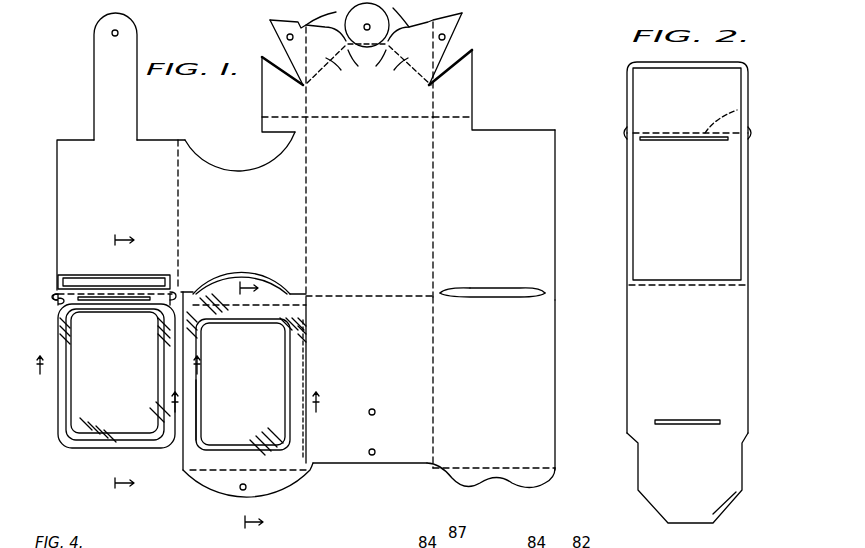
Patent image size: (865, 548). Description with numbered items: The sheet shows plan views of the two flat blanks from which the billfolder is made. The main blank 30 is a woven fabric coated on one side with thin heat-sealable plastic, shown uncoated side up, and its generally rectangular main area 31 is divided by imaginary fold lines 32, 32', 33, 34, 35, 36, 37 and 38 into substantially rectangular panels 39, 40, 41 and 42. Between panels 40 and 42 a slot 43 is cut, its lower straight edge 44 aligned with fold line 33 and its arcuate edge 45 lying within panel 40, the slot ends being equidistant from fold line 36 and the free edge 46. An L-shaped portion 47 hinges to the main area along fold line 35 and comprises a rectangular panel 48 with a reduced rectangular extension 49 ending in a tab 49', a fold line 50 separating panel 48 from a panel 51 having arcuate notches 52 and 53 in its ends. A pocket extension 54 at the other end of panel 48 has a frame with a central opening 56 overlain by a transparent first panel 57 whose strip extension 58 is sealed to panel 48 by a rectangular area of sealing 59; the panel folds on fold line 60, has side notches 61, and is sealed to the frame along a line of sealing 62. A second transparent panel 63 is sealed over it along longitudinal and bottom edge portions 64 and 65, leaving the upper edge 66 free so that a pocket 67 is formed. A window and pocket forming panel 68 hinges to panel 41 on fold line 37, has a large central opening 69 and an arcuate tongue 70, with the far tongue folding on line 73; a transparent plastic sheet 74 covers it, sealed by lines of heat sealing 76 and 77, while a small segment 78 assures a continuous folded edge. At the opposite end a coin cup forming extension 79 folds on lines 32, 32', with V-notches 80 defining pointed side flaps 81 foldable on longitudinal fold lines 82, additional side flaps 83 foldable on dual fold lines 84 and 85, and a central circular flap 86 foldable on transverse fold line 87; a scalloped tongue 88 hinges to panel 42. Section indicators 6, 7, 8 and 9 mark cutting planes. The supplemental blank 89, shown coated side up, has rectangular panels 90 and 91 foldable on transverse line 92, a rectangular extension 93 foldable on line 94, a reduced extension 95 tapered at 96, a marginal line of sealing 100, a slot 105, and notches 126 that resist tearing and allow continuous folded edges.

In FIG. 1, the main blank 30 is at (499, 147).
In FIG. 1, the main area 31 is at (555, 218).
In FIG. 1, the fold line 32 is at (347, 131).
In FIG. 1, the fold line 32' is at (452, 138).
In FIG. 1, the fold line 33 is at (378, 296).
In FIG. 1, the fold line 34 is at (500, 468).
In FIG. 1, the fold line 35 is at (306, 240).
In FIG. 1, the fold line 36 is at (433, 216).
In FIG. 1, the fold line 37 is at (309, 338).
In FIG. 1, the fold line 38 is at (433, 374).
In FIG. 1, the panel 39 is at (369, 207).
In FIG. 1, the panel 40 is at (494, 213).
In FIG. 1, the panel 41 is at (369, 380).
In FIG. 1, the panel 42 is at (494, 382).
In FIG. 1, the slot 43 is at (500, 288).
In FIG. 1, the lower straight edge 44 is at (505, 297).
In FIG. 1, the arcuate edge 45 is at (462, 289).
In FIG. 1, the free edge 46 is at (555, 345).
In FIG. 1, the L-shaped portion 47 is at (160, 140).
In FIG. 1, the rectangular panel 48 is at (117, 215).
In FIG. 1, the reduced rectangular extension 49 is at (93, 76).
In FIG. 1, the tab 49' is at (142, 23).
In FIG. 1, the fold line 50 is at (178, 177).
In FIG. 1, the panel 51 is at (242, 213).
In FIG. 1, the arcuate notch 52 is at (240, 172).
In FIG. 1, the arcuate notch 53 is at (220, 275).
In FIG. 1, the pocket extension 54 is at (60, 410).
In FIG. 1, the central opening 56 is at (75, 401).
In FIG. 1, the first panel 57 is at (57, 300).
In FIG. 1, the top transverse strip extension 58 is at (98, 278).
In FIG. 1, the rectangular area of sealing 59 is at (126, 280).
In FIG. 1, the fold line 60 is at (82, 282).
In FIG. 1, the side notches 61 is at (163, 278).
In FIG. 1, the line of sealing 62 is at (97, 302).
In FIG. 1, the second pocket forming panel 63 is at (116, 376).
In FIG. 1, the longitudinal edge portions 64 is at (165, 353).
In FIG. 1, the bottom edge portion 65 is at (96, 449).
In FIG. 1, the upper edge 66 is at (118, 311).
In FIG. 1, the pocket 67 is at (63, 457).
In FIG. 1, the window and pocket forming panel 68 is at (184, 472).
In FIG. 1, the central opening 69 is at (200, 412).
In FIG. 1, the arcuate tongue 70 is at (247, 278).
In FIG. 1, the fold line 73 is at (262, 462).
In FIG. 1, the transparent plastic sheet 74 is at (244, 381).
In FIG. 1, the line of heat sealing 76 is at (262, 283).
In FIG. 1, the line of heat sealing 77 is at (225, 493).
In FIG. 1, the small segment 78 is at (307, 297).
In FIG. 1, the coin cup forming extension 79 is at (343, 42).
In FIG. 1, the V-notches 80 is at (280, 68).
In FIG. 1, the pointed side flaps 81 is at (262, 97).
In FIG. 1, the longitudinal fold lines 82 is at (306, 87).
In FIG. 1, the side flaps 83 is at (272, 28).
In FIG. 1, the fold line 84 is at (303, 22).
In FIG. 1, the fold line 85 is at (404, 68).
In FIG. 1, the central circular flap 86 is at (384, 14).
In FIG. 1, the transverse fold line 87 is at (367, 61).
In FIG. 1, the scalloped tongue 88 is at (462, 485).
In FIG. 2, the supplemental blank 89 is at (734, 226).
In FIG. 2, the rectangular panel 90 is at (687, 206).
In FIG. 2, the rectangular panel 91 is at (735, 330).
In FIG. 2, the transverse fold line 92 is at (683, 287).
In FIG. 2, the rectangular extension 93 is at (687, 100).
In FIG. 2, the transverse fold line 94 is at (742, 112).
In FIG. 2, the reduced extension 95 is at (738, 460).
In FIG. 2, the taper 96 is at (716, 512).
In FIG. 2, the marginal line of sealing 100 is at (628, 246).
In FIG. 2, the slot 105 is at (685, 419).
In FIG. 2, the notches 126 is at (625, 133).
In FIG. 1, the section line 6 is at (124, 353).
In FIG. 1, the section line 7 is at (245, 408).
In FIG. 1, the section line 8 is at (124, 359).
In FIG. 1, the section line 9 is at (251, 397).